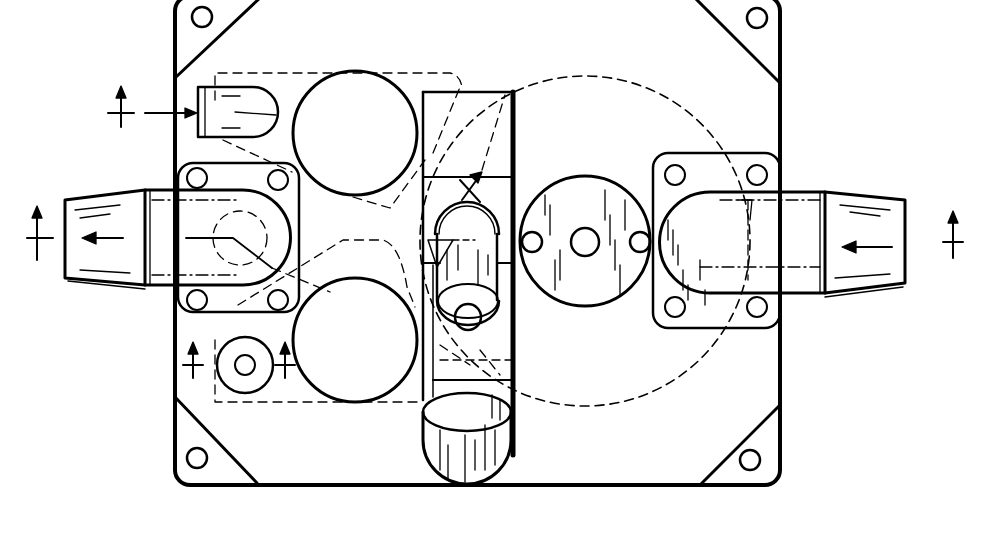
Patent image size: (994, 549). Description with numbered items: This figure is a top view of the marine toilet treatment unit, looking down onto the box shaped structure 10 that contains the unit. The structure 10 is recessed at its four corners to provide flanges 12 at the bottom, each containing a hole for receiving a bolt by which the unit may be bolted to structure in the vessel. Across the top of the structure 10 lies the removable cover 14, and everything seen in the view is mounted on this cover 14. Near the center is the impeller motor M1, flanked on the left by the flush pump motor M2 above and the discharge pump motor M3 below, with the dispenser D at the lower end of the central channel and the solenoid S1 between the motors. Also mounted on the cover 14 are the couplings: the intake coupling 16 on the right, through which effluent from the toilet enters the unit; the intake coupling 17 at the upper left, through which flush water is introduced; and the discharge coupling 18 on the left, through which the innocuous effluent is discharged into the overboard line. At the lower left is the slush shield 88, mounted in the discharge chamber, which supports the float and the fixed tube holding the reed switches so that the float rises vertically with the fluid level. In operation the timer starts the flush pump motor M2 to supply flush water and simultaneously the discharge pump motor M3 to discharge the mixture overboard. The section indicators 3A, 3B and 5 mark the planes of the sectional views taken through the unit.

The box shaped structure 10 is at (158, 437).
The flanges 12 is at (781, 45).
The removable cover 14 is at (781, 90).
The intake coupling 16 is at (848, 275).
The intake coupling 17 is at (230, 93).
The discharge coupling 18 is at (110, 287).
The slush shield 88 is at (254, 386).
The section line 5 is at (239, 372).
The section line 3A is at (492, 246).
The section line 3B is at (307, 145).
The impeller motor M1 is at (593, 293).
The flush pump motor M2 is at (393, 150).
The discharge pump motor M3 is at (398, 360).
The solenoid S1 is at (488, 318).
The dispenser D is at (420, 421).